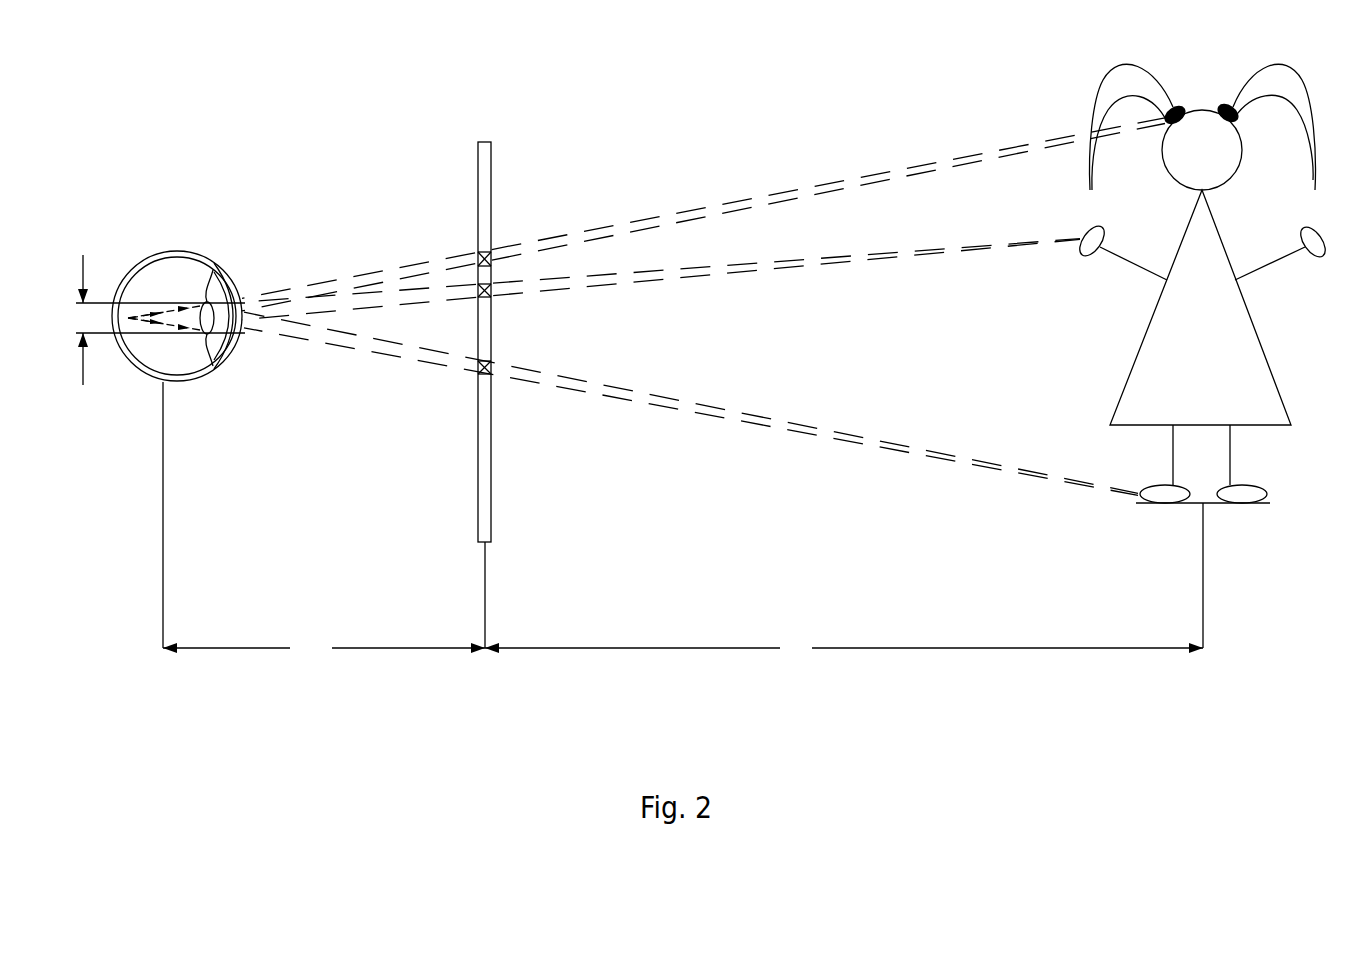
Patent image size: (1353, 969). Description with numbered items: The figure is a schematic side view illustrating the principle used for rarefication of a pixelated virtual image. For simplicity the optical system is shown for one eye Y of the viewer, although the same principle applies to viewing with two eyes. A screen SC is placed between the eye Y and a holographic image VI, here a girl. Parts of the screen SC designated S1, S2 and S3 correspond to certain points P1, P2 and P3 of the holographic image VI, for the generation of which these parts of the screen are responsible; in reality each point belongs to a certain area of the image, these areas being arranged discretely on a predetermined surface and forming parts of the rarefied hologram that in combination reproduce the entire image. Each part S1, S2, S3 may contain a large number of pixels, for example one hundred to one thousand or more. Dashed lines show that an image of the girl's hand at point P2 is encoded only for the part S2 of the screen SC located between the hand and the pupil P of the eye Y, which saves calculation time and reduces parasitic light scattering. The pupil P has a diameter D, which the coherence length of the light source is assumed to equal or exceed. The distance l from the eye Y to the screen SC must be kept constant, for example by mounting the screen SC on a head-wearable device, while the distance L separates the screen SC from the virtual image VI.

The eye Y is at (166, 252).
The pupil P is at (217, 303).
The diameter of the pupil D is at (159, 320).
The screen SC is at (478, 146).
The part of the screen S1 is at (492, 253).
The part of the screen S2 is at (491, 298).
The part of the screen S3 is at (491, 375).
The point of the holographic image P1 is at (1160, 140).
The point of the holographic image P2 is at (1078, 240).
The point of the holographic image P3 is at (1142, 488).
The holographic image VI is at (1045, 315).
The eye-to-screen distance l is at (324, 521).
The screen-to-image distance L is at (844, 582).